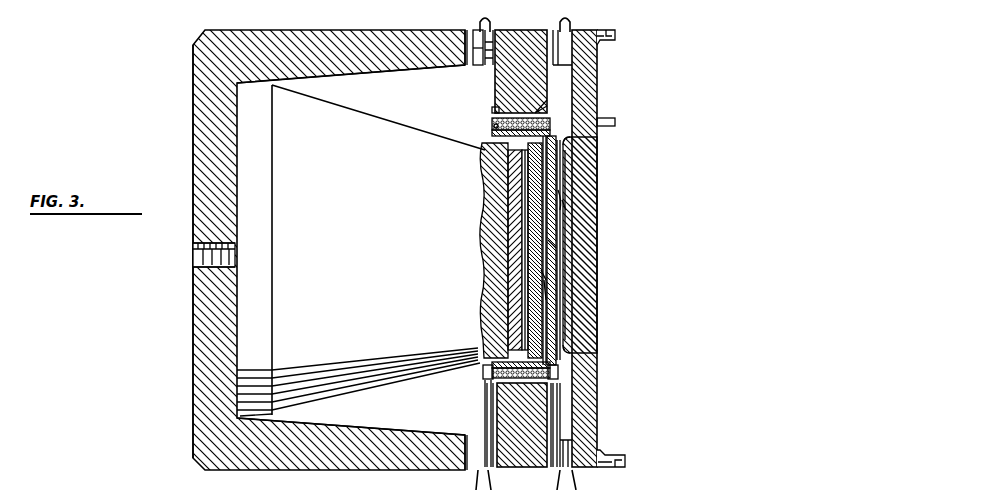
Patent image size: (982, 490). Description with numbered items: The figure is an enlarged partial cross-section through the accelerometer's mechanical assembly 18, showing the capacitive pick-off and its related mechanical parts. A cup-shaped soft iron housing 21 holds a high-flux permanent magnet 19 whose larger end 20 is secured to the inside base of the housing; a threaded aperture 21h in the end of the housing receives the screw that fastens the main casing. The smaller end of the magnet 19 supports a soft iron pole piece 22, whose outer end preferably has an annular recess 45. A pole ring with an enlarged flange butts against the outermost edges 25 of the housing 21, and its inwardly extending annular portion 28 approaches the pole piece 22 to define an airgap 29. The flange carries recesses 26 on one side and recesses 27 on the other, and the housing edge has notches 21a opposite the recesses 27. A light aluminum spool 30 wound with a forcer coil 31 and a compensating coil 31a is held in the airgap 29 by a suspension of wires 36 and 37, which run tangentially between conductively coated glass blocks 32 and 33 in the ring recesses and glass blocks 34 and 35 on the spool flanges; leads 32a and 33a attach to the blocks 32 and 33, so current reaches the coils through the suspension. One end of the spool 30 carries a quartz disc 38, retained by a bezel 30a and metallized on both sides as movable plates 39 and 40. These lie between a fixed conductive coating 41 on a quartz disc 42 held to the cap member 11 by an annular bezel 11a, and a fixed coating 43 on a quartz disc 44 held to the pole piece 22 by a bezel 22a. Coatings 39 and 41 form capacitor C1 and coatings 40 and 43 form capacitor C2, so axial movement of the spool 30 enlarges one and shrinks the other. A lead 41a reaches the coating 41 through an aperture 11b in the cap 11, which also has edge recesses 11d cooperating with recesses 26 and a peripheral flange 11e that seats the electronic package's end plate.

The cap member 11 is at (590, 305).
The annular bezel 11a is at (575, 142).
The aperture 11b is at (598, 163).
The edge recesses 11d is at (597, 62).
The peripheral flange 11e is at (613, 32).
The mechanical assembly 18 is at (191, 372).
The permanent magnet 19 is at (364, 276).
The larger end of magnet 20 is at (236, 208).
The soft iron housing 21 is at (193, 93).
The notches 21a is at (467, 65).
The threaded aperture 21h is at (200, 257).
The pole piece 22 is at (533, 245).
The annular bezel 22a is at (486, 178).
The outermost edges of housing 25 is at (476, 58).
The recesses 26 is at (533, 260).
The recesses 27 is at (489, 62).
The inwardly extending annular portion 28 is at (540, 108).
The airgap 29 is at (492, 143).
The spool 30 is at (552, 132).
The bezel 30a is at (552, 124).
The forcer coil 31 is at (493, 128).
The compensating coil 31a is at (492, 110).
The glass block 32 is at (576, 58).
The wire leads 32a is at (600, 40).
The glass block 33 is at (478, 48).
The wires 33a is at (480, 27).
The glass block 34 is at (552, 380).
The glass block 35 is at (484, 374).
The suspension wire 36 is at (560, 405).
The suspension wire 37 is at (485, 392).
The movable capacitor plate 38 is at (549, 262).
The metallized surface 39 is at (558, 222).
The metallized surface 40 is at (544, 262).
The conductive coating 41 is at (560, 196).
The lead 41a is at (617, 122).
The fused quartz disc 42 is at (565, 206).
The conductive coating 43 is at (513, 225).
The quartz disc 44 is at (548, 300).
The annular recess 45 is at (523, 200).
The variable capacitor C1 is at (550, 246).
The variable capacitor C2 is at (548, 278).